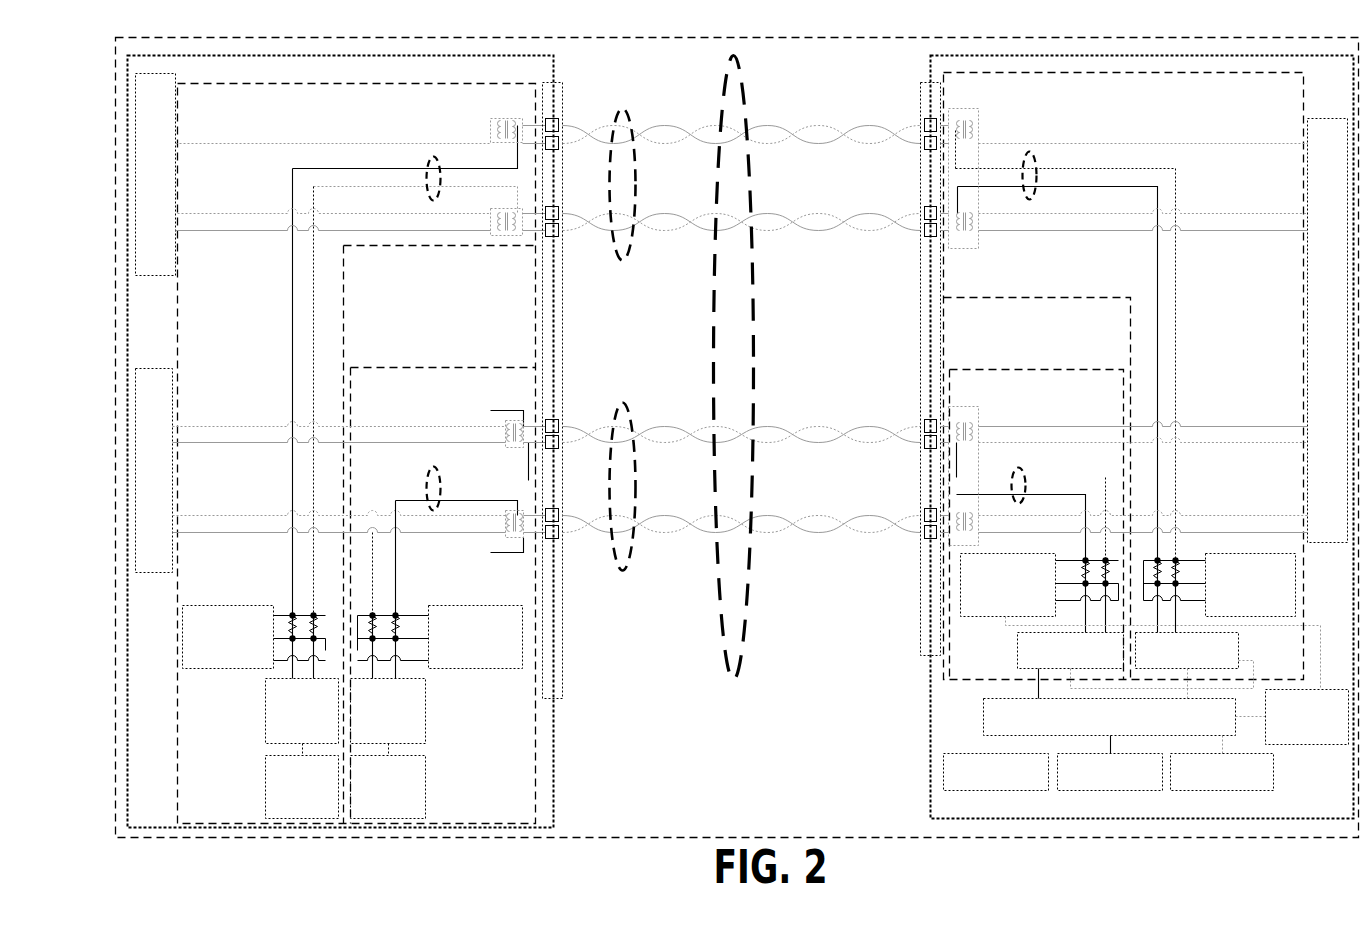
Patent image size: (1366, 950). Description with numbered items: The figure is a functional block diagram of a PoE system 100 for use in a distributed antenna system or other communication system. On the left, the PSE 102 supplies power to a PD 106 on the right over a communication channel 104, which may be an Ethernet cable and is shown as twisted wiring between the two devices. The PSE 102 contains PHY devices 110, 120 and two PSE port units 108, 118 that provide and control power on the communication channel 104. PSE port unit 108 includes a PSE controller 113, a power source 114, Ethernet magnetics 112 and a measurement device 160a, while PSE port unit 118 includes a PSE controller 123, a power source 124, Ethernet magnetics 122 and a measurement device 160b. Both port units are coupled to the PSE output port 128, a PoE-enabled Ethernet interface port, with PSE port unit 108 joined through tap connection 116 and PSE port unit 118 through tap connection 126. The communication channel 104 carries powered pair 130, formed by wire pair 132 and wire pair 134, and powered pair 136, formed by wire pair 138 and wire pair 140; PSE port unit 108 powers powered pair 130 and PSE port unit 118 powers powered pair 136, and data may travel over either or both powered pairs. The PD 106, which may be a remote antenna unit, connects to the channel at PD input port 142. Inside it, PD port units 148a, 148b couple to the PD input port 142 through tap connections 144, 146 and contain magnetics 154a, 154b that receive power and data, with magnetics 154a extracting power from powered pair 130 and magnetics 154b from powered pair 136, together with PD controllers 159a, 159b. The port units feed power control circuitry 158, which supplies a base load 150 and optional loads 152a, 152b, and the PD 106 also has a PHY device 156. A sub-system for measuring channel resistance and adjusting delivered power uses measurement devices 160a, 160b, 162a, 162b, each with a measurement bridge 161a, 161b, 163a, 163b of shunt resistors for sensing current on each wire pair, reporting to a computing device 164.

The PoE system 100 is at (421, 25).
The PSE 102 is at (563, 80).
The communication channel 104 is at (746, 72).
The PD 106 is at (930, 82).
The PSE port unit 108 is at (345, 285).
The PHY device 110 is at (156, 175).
The Ethernet magnetics 112 is at (512, 116).
The PSE controller 113 is at (302, 711).
The power source 114 is at (302, 781).
The tap connection 116 is at (433, 197).
The PSE port unit 118 is at (453, 366).
The PHY device 120 is at (154, 471).
The Ethernet magnetics 122 is at (512, 408).
The PSE controller 123 is at (388, 711).
The power source 124 is at (388, 781).
The tap connection 126 is at (433, 466).
The PSE output port 128 is at (562, 292).
The powered pair 130 is at (629, 259).
The wire pair 132 is at (800, 137).
The wire pair 134 is at (780, 234).
The powered pair 136 is at (631, 560).
The wire pair 138 is at (790, 440).
The wire pair 140 is at (790, 530).
The PD input port 142 is at (920, 313).
The tap connection 144 is at (1040, 152).
The tap connection 146 is at (1030, 465).
The PD port unit 148a is at (1075, 368).
The PD port unit 148b is at (1128, 300).
The base load 150 is at (996, 772).
The optional load 152a is at (1110, 772).
The optional load 152b is at (1222, 772).
The magnetics 154a is at (972, 104).
The magnetics 154b is at (977, 404).
The PHY device 156 is at (1328, 331).
The power control circuitry 158 is at (1110, 717).
The PD controller 159a is at (1187, 651).
The PD controller 159b is at (1071, 651).
The measurement device 160a is at (228, 637).
The measurement device 160b is at (476, 637).
The measurement bridge 161a is at (288, 612).
The measurement bridge 161b is at (380, 612).
The measurement device 162a is at (1251, 585).
The measurement device 162b is at (1008, 585).
The measurement bridge 163a is at (1172, 558).
The measurement bridge 163b is at (1080, 558).
The computing device 164 is at (1307, 717).